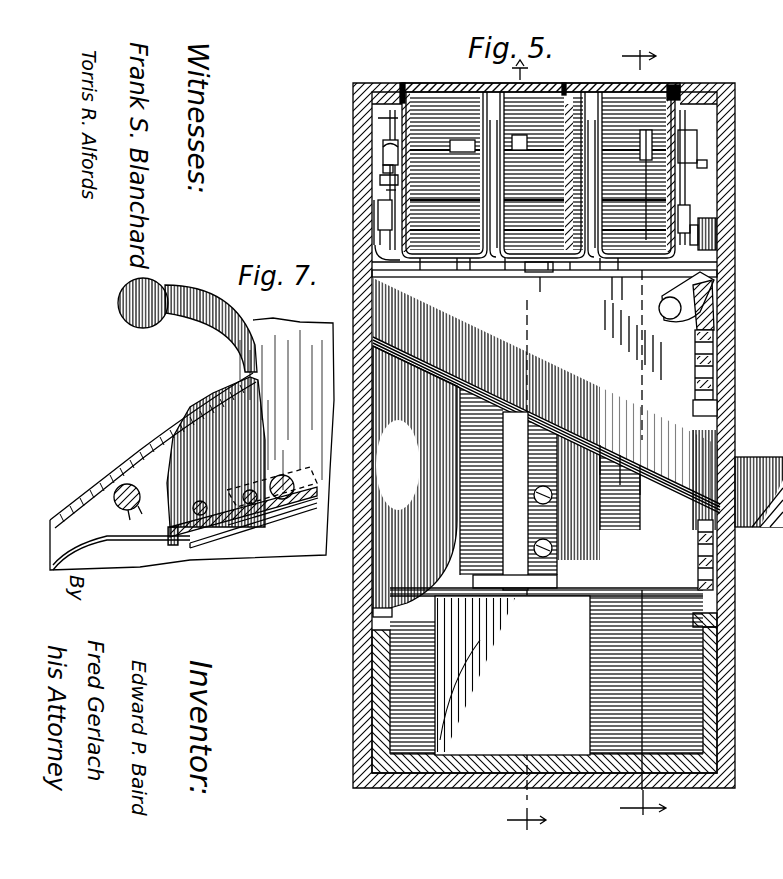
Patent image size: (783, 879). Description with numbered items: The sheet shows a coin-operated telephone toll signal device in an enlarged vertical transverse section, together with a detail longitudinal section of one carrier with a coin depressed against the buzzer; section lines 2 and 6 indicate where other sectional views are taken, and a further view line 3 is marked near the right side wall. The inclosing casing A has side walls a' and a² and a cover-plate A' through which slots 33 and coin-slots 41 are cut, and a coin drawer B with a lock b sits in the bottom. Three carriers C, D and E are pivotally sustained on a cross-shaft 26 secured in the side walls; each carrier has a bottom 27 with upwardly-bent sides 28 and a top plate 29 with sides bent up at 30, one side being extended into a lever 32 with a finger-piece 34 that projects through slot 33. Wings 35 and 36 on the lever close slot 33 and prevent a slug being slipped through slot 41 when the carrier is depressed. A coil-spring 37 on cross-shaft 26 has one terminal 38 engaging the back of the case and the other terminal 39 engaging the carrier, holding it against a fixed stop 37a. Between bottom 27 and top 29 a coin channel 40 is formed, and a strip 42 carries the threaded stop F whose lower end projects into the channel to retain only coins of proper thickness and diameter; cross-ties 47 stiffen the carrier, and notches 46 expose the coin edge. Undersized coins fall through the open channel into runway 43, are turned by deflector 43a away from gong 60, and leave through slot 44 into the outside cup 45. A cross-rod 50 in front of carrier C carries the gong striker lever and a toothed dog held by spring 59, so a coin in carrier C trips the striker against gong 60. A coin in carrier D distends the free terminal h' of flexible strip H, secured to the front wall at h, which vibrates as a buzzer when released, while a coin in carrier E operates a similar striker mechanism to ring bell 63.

In FIG. 5, the coin receptacle or drawer B is at (718, 690).
In FIG. 5, the lever 32 is at (412, 92).
In FIG. 5, the slot 33 is at (403, 85).
In FIG. 7, the slot 33 is at (245, 378).
In FIG. 5, the cover-plate A' is at (444, 159).
In FIG. 7, the cover-plate A' is at (117, 447).
In FIG. 5, the cross-tie 47 is at (456, 197).
In FIG. 7, the cross-tie 47 is at (252, 490).
In FIG. 5, the carrier D is at (520, 145).
In FIG. 5, the carrier C is at (612, 145).
In FIG. 5, the notch 46 is at (650, 150).
In FIG. 7, the notch 46 is at (193, 542).
In FIG. 5, the part 3 is at (776, 188).
In FIG. 5, the inclosing casing A is at (361, 179).
In FIG. 5, the stop F is at (393, 147).
In FIG. 5, the strip 42 is at (388, 168).
In FIG. 5, the carrier E is at (398, 180).
In FIG. 5, the spring terminal 39 is at (395, 195).
In FIG. 5, the spring terminal 38 is at (384, 205).
In FIG. 5, the coil-spring 37 is at (392, 212).
In FIG. 5, the upwardly-bent sides 28 is at (385, 248).
In FIG. 5, the cross-shaft 26 is at (690, 213).
In FIG. 7, the cross-shaft 26 is at (287, 477).
In FIG. 5, the side wall a' is at (722, 236).
In FIG. 5, the cross-rod 50 is at (707, 243).
In FIG. 7, the cross-rod 50 is at (129, 490).
In FIG. 5, the section line 2 is at (526, 446).
In FIG. 5, the section line 6 is at (643, 434).
In FIG. 5, the bottom 27 is at (485, 262).
In FIG. 7, the bottom 27 is at (270, 512).
In FIG. 5, the upwardly-bent side 30 is at (478, 278).
In FIG. 5, the top plate 29 is at (528, 277).
In FIG. 7, the top plate 29 is at (310, 510).
In FIG. 5, the free terminal h' is at (527, 308).
In FIG. 7, the free terminal h' is at (154, 568).
In FIG. 5, the spring 59 is at (620, 299).
In FIG. 5, the runway 43 is at (546, 395).
In FIG. 5, the deflector 43a is at (715, 298).
In FIG. 5, the slot 44 is at (735, 407).
In FIG. 5, the cup or receiver 45 is at (759, 492).
In FIG. 5, the bell 63 is at (415, 479).
In FIG. 5, the flexible strip H is at (515, 501).
In FIG. 7, the flexible strip H is at (92, 536).
In FIG. 5, the secured terminal h is at (530, 521).
In FIG. 5, the lock b is at (546, 675).
In FIG. 5, the gong 60 is at (715, 586).
In FIG. 7, the finger-piece 34 is at (187, 325).
In FIG. 7, the wing 36 is at (192, 444).
In FIG. 7, the fixed stop 37a is at (210, 392).
In FIG. 7, the coin-slot 41 is at (175, 418).
In FIG. 7, the wing 35 is at (275, 442).
In FIG. 7, the coin channel or guide 40 is at (243, 513).